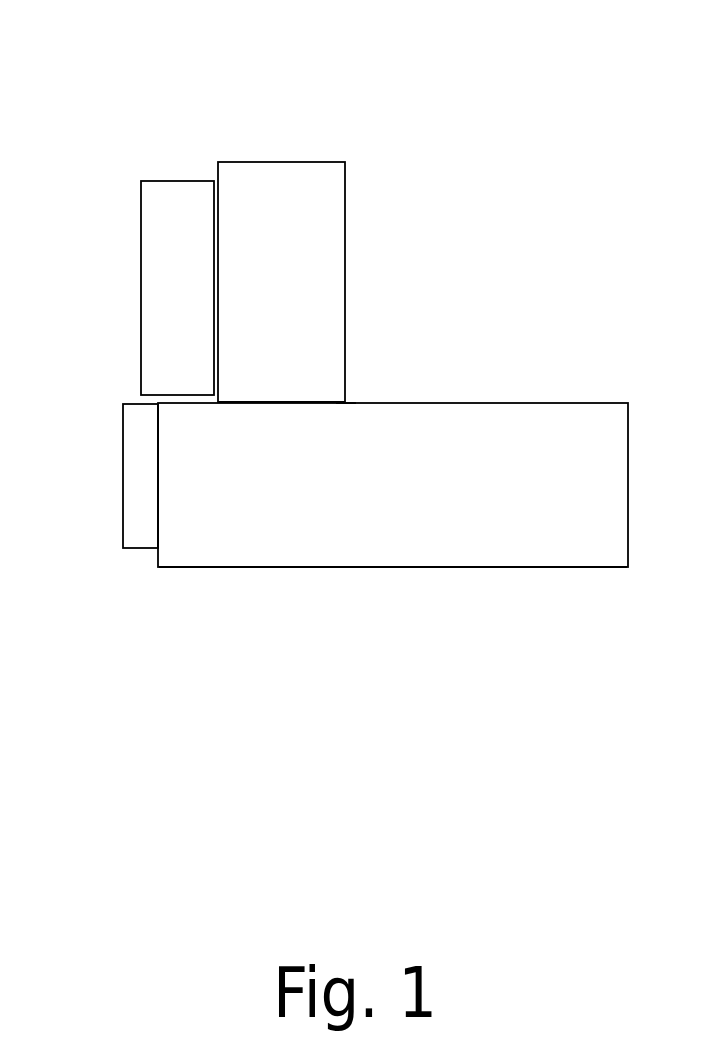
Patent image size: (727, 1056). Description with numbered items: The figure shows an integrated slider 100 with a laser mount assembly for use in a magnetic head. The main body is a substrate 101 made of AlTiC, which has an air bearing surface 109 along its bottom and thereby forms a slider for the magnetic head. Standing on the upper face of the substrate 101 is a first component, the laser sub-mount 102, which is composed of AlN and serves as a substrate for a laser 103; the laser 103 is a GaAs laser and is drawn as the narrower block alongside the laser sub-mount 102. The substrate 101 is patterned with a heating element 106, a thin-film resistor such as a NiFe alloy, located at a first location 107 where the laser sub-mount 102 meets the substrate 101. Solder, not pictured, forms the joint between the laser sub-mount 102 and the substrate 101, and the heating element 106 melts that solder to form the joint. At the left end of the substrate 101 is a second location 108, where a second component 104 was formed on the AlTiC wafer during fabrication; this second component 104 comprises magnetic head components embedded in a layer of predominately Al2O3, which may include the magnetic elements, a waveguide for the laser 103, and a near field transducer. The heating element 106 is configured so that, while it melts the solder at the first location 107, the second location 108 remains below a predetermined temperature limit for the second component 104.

The integrated slider 100 is at (285, 67).
The substrate 101 is at (483, 480).
The laser sub-mount 102 is at (251, 229).
The laser 103 is at (161, 367).
The second component 104 is at (123, 525).
The heating element 106 is at (347, 403).
The first location 107 is at (273, 393).
The second location 108 is at (152, 438).
The air bearing surface 109 is at (292, 586).